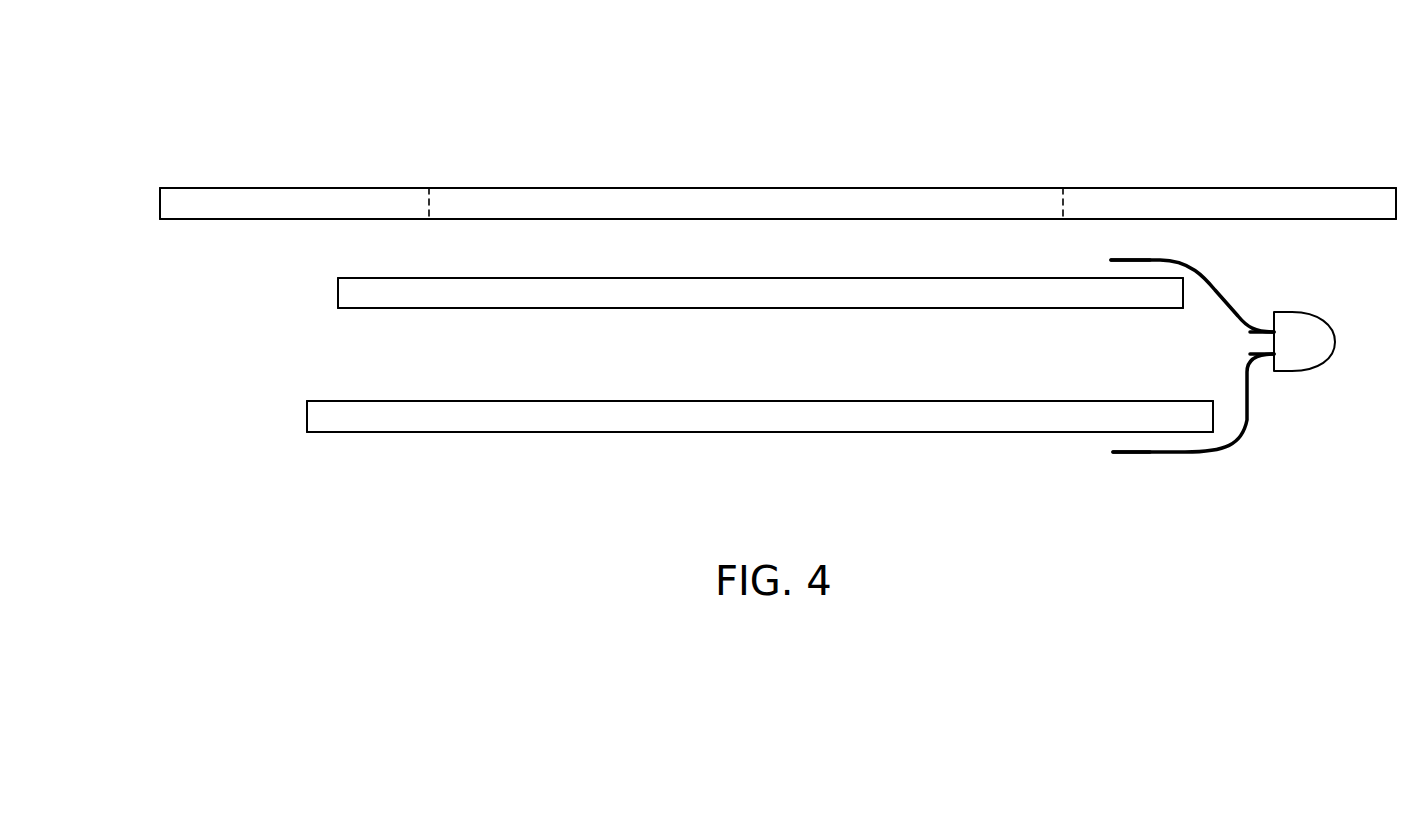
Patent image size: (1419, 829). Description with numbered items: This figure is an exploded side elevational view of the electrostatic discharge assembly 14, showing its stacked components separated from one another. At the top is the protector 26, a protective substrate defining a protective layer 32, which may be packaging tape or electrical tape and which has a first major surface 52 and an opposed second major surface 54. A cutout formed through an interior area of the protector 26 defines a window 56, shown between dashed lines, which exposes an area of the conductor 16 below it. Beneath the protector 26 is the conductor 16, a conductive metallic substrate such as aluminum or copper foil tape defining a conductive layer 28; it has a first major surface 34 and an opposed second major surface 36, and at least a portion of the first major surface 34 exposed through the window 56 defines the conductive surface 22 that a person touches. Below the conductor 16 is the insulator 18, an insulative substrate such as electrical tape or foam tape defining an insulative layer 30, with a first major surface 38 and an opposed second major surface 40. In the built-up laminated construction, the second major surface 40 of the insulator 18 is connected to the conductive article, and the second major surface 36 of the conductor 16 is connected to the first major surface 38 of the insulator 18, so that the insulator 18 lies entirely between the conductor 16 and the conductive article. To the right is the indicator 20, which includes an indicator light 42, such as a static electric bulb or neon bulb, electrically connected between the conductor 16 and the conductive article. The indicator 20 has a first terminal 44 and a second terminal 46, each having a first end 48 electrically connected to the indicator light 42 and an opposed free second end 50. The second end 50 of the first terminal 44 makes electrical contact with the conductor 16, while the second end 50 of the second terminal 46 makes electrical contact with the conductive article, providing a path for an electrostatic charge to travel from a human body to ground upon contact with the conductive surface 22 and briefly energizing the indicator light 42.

The electrostatic discharge assembly 14 is at (1277, 101).
The conductor 16 is at (338, 295).
The insulator 18 is at (307, 418).
The indicator 20 is at (1344, 326).
The conductive surface 22 is at (762, 278).
The protector 26 is at (160, 209).
The conductive layer 28 is at (318, 297).
The insulative layer 30 is at (293, 418).
The protective layer 32 is at (145, 198).
The first major surface of the conductor 34 is at (441, 278).
The second major surface of the conductor 36 is at (440, 308).
The first major surface of the insulator 38 is at (512, 401).
The second major surface of the insulator 40 is at (512, 432).
The indicator light 42 is at (1307, 372).
The first terminal 44 is at (1200, 268).
The second terminal 46 is at (1180, 453).
The first end 48 is at (1255, 325).
The second end 50 is at (1102, 259).
The first major surface of the protector 52 is at (276, 188).
The second major surface of the protector 54 is at (275, 220).
The window 56 is at (746, 198).